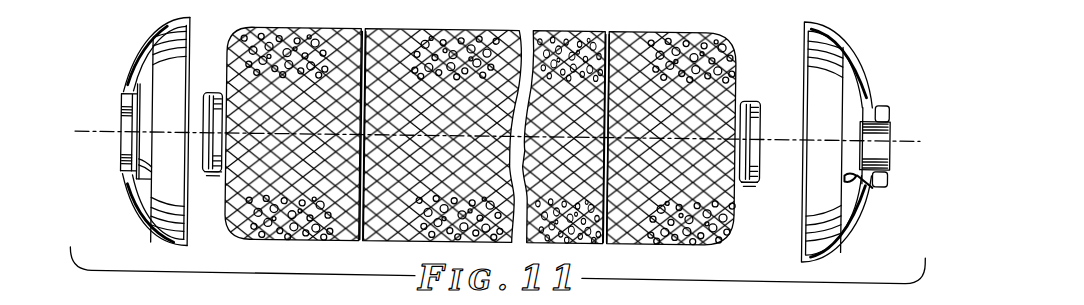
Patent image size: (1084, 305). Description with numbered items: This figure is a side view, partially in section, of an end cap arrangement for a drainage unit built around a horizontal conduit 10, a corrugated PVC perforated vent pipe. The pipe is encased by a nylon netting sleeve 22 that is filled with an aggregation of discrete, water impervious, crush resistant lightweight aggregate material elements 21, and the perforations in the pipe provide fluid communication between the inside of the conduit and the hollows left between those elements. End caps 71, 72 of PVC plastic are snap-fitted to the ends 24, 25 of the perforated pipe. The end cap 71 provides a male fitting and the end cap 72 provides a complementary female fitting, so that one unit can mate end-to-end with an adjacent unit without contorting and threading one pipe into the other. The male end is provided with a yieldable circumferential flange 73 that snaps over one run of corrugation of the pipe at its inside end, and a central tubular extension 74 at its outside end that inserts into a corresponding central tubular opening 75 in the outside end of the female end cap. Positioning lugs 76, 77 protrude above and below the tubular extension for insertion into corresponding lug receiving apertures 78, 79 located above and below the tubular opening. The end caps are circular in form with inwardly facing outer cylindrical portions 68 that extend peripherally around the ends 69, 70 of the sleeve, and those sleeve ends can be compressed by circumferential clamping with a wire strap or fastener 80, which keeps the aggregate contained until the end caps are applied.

The horizontal conduit 10 is at (206, 80).
The aggregate material elements 21 is at (337, 30).
The sleeve 22 is at (583, 242).
The pipe end 24 is at (205, 178).
The pipe end 25 is at (748, 182).
The outer cylindrical portions 68 is at (168, 248).
The sleeve end 69 is at (262, 30).
The sleeve end 70 is at (700, 28).
The end cap 71 is at (880, 54).
The end cap 72 is at (115, 198).
The yieldable circumferential flange 73 is at (150, 101).
The central tubular extension 74 is at (891, 114).
The central tubular opening 75 is at (121, 149).
The positioning lug 76 is at (877, 97).
The positioning lug 77 is at (882, 179).
The lug receiving aperture 78 is at (122, 95).
The lug receiving aperture 79 is at (124, 175).
The wire strap or fastener 80 is at (361, 240).